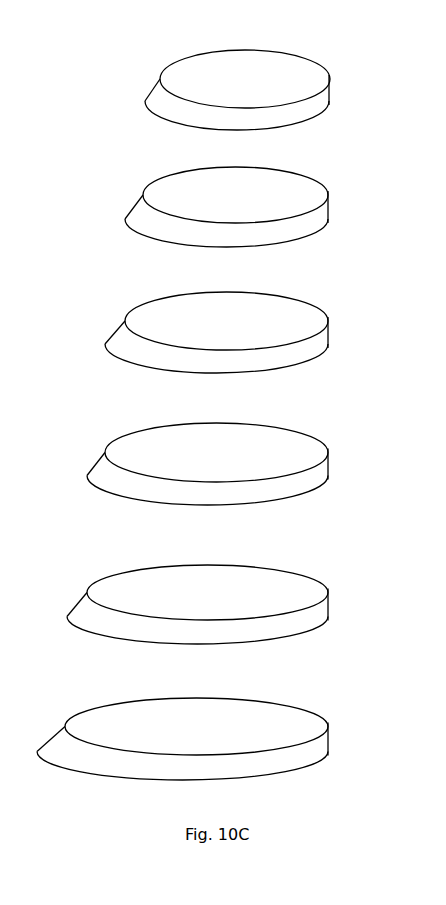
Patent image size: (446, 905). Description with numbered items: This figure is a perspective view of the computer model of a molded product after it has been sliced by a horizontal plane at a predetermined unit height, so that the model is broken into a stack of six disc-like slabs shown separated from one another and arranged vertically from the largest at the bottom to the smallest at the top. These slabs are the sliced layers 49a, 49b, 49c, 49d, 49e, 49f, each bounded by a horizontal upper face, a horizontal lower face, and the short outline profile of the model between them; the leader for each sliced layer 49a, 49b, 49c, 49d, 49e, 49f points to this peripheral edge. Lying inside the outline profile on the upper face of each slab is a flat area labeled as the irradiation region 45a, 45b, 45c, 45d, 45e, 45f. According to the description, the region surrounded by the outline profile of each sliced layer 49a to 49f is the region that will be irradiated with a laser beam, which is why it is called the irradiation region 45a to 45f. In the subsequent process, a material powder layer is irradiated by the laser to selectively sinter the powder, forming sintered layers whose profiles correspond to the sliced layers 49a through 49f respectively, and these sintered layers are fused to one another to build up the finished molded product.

The irradiation region 45a is at (210, 738).
The irradiation region 45b is at (208, 598).
The irradiation region 45c is at (225, 466).
The irradiation region 45d is at (230, 331).
The irradiation region 45e is at (250, 200).
The irradiation region 45f is at (253, 88).
The sliced layer 49a is at (326, 742).
The sliced layer 49b is at (326, 607).
The sliced layer 49c is at (326, 472).
The sliced layer 49d is at (326, 338).
The sliced layer 49e is at (326, 215).
The sliced layer 49f is at (327, 97).